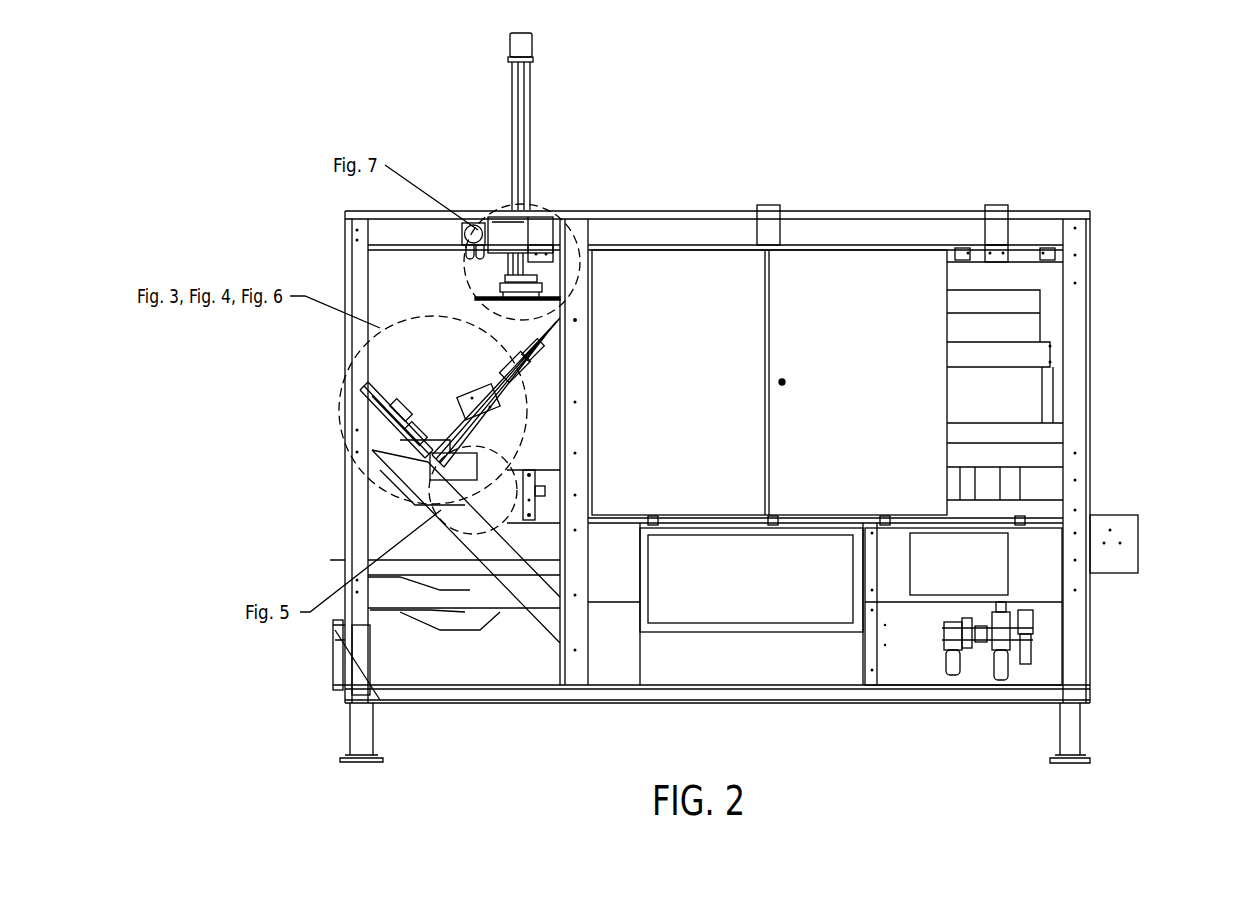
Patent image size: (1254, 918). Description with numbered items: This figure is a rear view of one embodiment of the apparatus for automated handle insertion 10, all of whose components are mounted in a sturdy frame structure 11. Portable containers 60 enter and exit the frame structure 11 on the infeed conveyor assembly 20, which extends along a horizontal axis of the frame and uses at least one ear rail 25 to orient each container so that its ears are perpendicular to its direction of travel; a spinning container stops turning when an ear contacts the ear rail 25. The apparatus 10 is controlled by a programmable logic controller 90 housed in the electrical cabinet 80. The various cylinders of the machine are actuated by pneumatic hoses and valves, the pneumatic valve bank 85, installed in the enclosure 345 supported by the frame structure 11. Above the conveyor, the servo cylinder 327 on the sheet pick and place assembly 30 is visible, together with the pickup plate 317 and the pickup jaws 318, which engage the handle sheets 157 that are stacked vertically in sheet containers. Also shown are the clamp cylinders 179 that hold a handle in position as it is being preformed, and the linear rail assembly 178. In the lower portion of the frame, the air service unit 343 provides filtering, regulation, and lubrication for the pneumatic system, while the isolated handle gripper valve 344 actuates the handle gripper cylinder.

The apparatus for automated handle insertion 10 is at (828, 197).
The frame structure 11 is at (1073, 437).
The infeed conveyor assembly 20 is at (1115, 558).
The ear rail 25 is at (553, 470).
The sheet pick and place assembly 30 is at (512, 232).
The portable container 60 is at (480, 478).
The electrical cabinet 80 is at (883, 300).
The pneumatic valve bank 85 is at (688, 632).
The programmable logic controller 90 is at (947, 382).
The handle sheet 157 is at (517, 297).
The linear rail assembly 178 is at (410, 430).
The clamp cylinder 179 is at (375, 397).
The pickup plate 317 is at (500, 285).
The pickup jaws 318 is at (510, 290).
The servo cylinder 327 is at (528, 105).
The air service unit 343 is at (978, 643).
The isolated handle gripper valve 344 is at (1008, 572).
The enclosure 345 is at (763, 595).